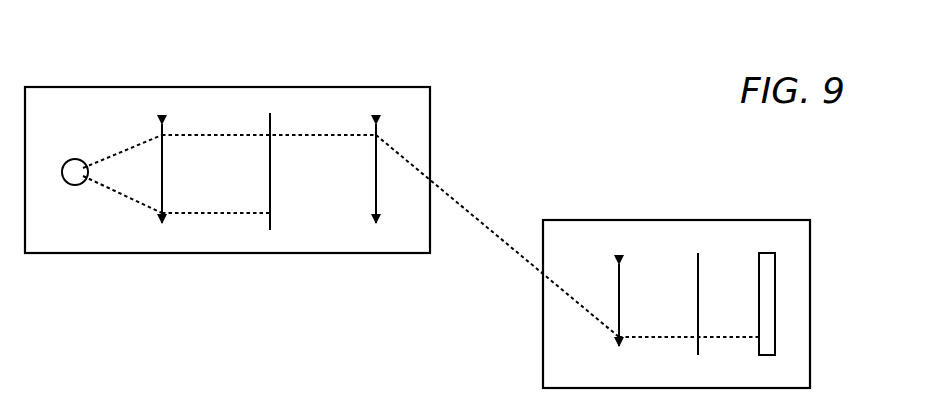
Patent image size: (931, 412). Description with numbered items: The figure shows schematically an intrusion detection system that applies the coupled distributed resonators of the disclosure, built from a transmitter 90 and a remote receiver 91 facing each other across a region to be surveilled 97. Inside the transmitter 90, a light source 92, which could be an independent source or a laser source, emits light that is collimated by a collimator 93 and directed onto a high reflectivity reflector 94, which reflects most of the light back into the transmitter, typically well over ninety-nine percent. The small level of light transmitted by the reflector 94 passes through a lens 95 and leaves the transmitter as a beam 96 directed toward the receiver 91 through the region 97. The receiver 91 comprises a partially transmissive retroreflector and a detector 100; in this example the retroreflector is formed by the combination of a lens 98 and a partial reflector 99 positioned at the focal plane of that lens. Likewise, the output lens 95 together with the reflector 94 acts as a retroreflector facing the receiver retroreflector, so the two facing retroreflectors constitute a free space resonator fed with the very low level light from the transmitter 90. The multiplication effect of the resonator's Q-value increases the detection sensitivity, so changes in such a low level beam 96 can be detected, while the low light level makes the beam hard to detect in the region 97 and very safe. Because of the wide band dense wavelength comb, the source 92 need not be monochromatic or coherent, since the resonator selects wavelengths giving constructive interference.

The transmitter 90 is at (270, 253).
The remote receiver 91 is at (565, 220).
The light source 92 is at (78, 185).
The collimator 93 is at (162, 233).
The high reflectivity reflector 94 is at (270, 230).
The lens 95 is at (376, 233).
The beam 96 is at (488, 250).
The region to be surveilled 97 is at (421, 236).
The lens 98 is at (619, 255).
The partial reflector 99 is at (698, 253).
The detector 100 is at (768, 253).